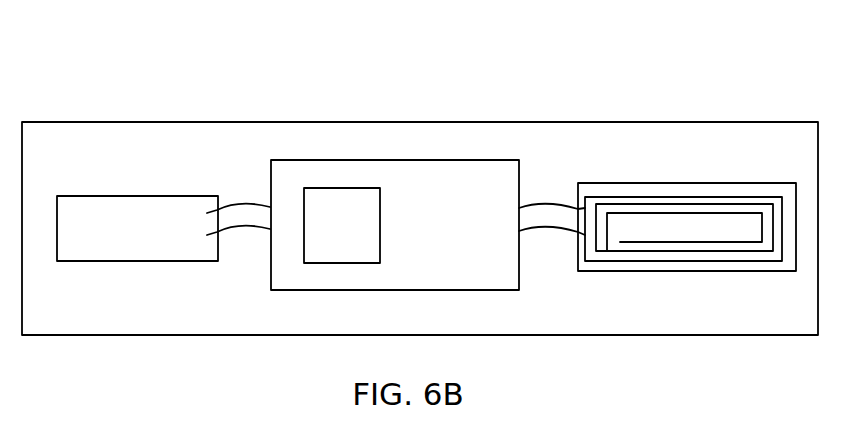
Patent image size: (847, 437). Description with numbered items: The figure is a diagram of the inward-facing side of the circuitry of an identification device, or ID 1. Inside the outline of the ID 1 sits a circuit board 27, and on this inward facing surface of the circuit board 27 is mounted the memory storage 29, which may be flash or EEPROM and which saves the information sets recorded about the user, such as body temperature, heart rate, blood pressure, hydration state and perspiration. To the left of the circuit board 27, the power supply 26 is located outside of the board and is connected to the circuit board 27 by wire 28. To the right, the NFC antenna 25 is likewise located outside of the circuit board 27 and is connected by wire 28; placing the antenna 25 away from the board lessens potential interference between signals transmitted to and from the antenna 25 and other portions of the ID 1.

The ID 1 is at (92, 122).
The NFC antenna 25 is at (625, 192).
The power supply 26 is at (137, 228).
The circuit board 27 is at (486, 160).
The wire 28 is at (240, 204).
The memory storage 29 is at (342, 225).